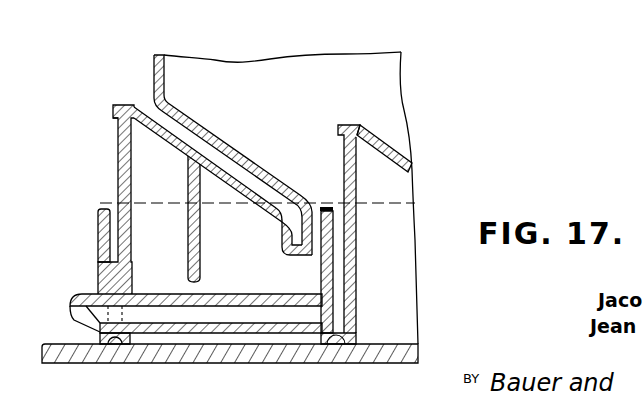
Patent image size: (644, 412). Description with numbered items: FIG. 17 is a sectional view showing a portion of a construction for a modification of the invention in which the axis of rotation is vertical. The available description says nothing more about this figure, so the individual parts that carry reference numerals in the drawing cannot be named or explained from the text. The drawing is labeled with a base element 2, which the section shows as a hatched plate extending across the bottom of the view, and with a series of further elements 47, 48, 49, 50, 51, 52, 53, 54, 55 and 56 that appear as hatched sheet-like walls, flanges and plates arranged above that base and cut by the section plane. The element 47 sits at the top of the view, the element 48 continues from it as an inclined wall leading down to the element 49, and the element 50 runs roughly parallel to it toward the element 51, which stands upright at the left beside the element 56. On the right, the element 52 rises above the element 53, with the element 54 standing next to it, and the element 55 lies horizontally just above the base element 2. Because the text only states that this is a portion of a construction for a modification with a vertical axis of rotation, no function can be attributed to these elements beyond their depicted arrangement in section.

The deck plate 2 is at (126, 345).
The upper flange 47 is at (161, 55).
The inclined wall 48 is at (221, 139).
The return bend 49 is at (295, 254).
The inner inclined wall 50 is at (179, 148).
The vertical wall 51 is at (118, 174).
The upright support 52 is at (357, 176).
The lower support portion 53 is at (341, 264).
The inner upright 54 is at (324, 208).
The bottom plate 55 is at (284, 315).
The web 56 is at (201, 247).